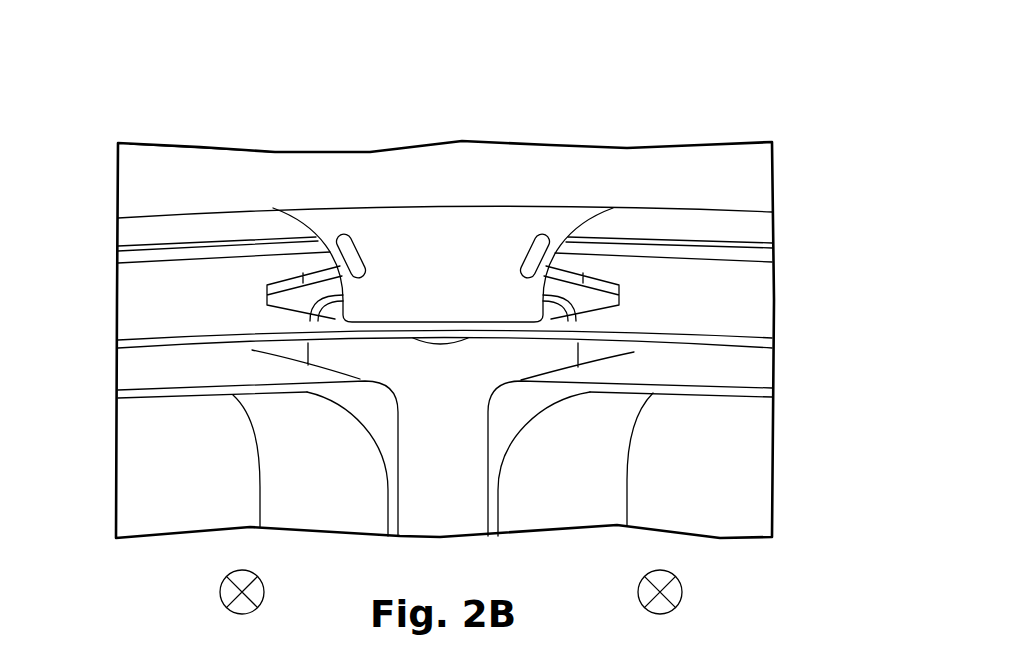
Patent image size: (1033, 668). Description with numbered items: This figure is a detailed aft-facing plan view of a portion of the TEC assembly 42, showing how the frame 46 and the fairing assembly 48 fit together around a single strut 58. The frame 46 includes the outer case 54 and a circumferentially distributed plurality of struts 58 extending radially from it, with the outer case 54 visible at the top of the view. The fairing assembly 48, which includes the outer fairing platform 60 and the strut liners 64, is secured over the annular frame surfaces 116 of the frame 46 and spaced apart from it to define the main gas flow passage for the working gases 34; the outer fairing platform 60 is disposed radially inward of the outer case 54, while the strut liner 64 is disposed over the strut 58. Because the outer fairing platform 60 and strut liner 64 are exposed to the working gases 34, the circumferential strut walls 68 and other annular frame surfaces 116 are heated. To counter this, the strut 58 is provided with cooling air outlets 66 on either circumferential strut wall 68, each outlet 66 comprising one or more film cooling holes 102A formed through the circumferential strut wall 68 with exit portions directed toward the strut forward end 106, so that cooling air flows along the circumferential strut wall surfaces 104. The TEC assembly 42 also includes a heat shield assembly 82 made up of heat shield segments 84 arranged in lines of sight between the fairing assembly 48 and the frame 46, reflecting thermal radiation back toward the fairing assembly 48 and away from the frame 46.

The working gases 34 is at (242, 614).
The TEC assembly 42 is at (749, 101).
The frame 46 is at (600, 128).
The fairing assembly 48 is at (708, 418).
The outer case 54 is at (272, 149).
The strut 58 is at (396, 224).
The outer fairing platform 60 is at (132, 379).
The strut liner 64 is at (310, 438).
The cooling air outlets 66 is at (504, 264).
The circumferential strut wall 68 is at (506, 310).
The heat shield assembly 82 is at (800, 315).
The heat shield segment 84 is at (723, 323).
The film cooling holes 102A is at (350, 255).
The circumferential strut wall surface 104 is at (378, 318).
The strut forward end 106 is at (467, 237).
The annular frame surfaces 116 is at (715, 215).